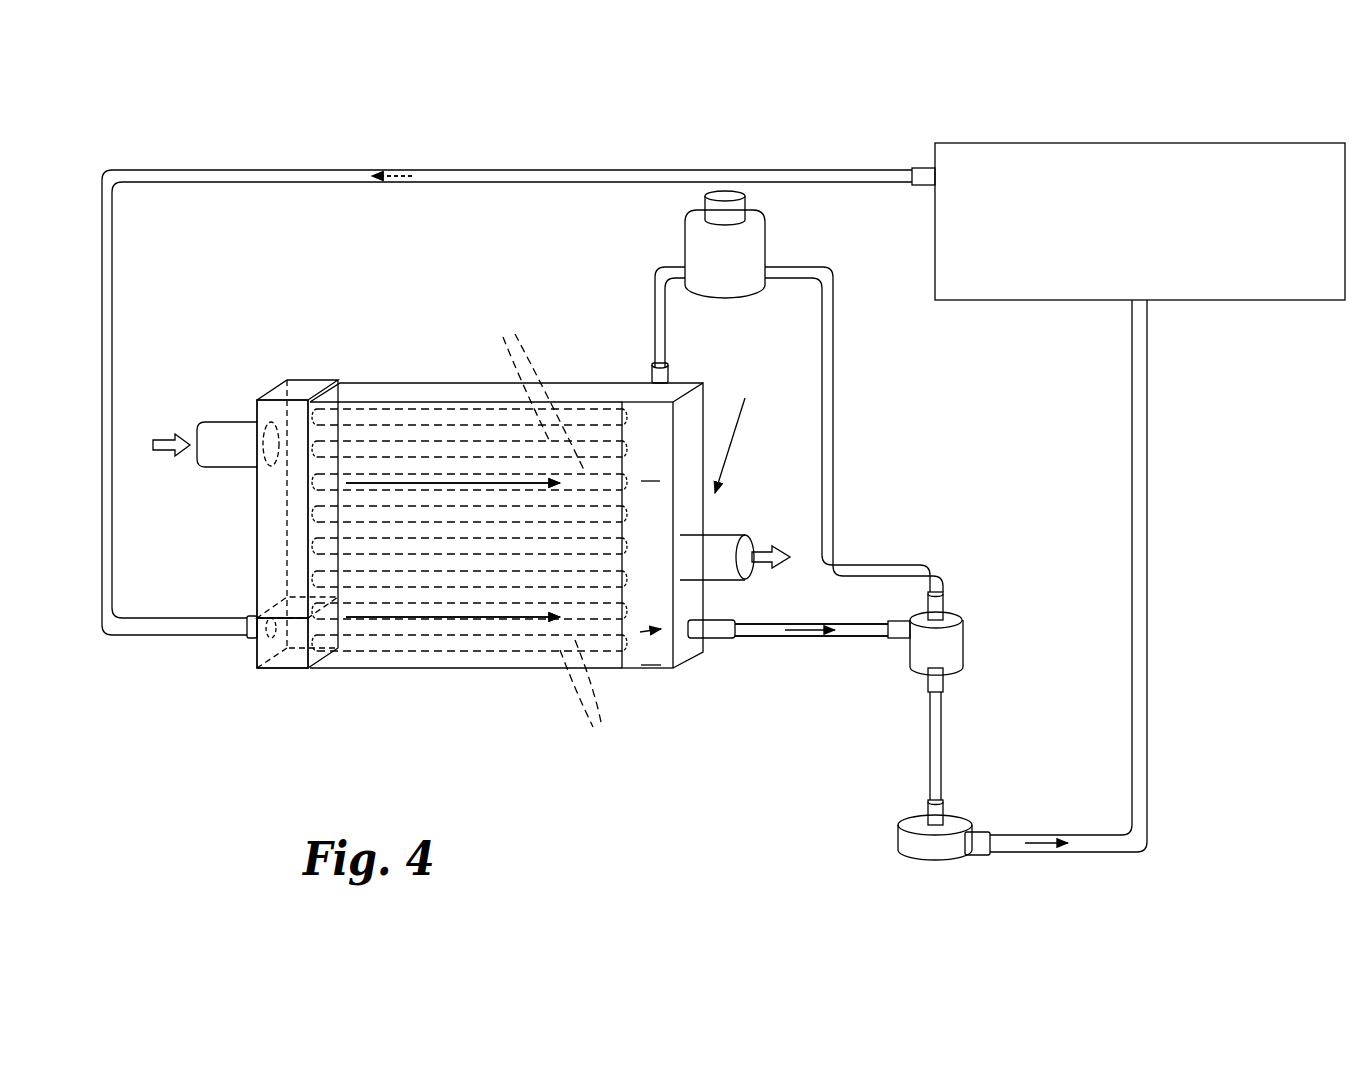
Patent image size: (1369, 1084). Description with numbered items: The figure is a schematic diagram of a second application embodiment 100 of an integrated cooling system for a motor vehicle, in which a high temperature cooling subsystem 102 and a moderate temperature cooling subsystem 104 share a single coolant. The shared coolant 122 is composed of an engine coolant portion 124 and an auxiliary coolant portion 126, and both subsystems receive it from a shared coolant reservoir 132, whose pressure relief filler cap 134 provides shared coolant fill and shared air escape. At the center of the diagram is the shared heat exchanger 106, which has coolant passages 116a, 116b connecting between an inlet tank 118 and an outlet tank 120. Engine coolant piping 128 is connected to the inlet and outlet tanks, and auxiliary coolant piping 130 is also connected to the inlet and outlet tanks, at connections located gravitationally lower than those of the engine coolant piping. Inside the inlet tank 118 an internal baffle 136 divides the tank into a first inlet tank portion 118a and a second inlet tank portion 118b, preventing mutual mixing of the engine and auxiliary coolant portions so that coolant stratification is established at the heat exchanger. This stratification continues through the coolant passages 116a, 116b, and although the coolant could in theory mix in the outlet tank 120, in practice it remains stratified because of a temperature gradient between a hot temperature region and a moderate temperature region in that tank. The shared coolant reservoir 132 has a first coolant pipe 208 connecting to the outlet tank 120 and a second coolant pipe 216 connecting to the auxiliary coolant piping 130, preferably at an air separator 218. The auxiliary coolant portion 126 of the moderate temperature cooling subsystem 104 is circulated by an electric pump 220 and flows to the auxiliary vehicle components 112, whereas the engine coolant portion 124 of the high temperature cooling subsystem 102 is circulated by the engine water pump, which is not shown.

The second application embodiment of the integrated cooling system 100 is at (517, 475).
The high temperature cooling subsystem 102 is at (665, 556).
The moderate temperature cooling subsystem 104 is at (830, 733).
The shared heat exchanger 106 is at (506, 529).
The auxiliary vehicle components 112 is at (967, 143).
The coolant passage 116a is at (469, 414).
The coolant passage 116b is at (469, 645).
The inlet tank 118 is at (239, 526).
The first inlet tank portion 118a is at (272, 542).
The second inlet tank portion 118b is at (262, 658).
The outlet tank 120 is at (690, 385).
The shared coolant 122 is at (387, 183).
The engine coolant portion 124 is at (463, 482).
The auxiliary coolant portion 126 is at (387, 183).
The engine coolant piping 128 is at (243, 422).
The auxiliary coolant piping 130 is at (483, 170).
The shared coolant reservoir 132 is at (765, 243).
The pressure relief filler cap 134 is at (740, 203).
The internal baffle 136 is at (277, 599).
The first coolant pipe 208 is at (655, 310).
The second coolant pipe 216 is at (833, 463).
The air separator 218 is at (952, 618).
The electric pump 220 is at (952, 825).